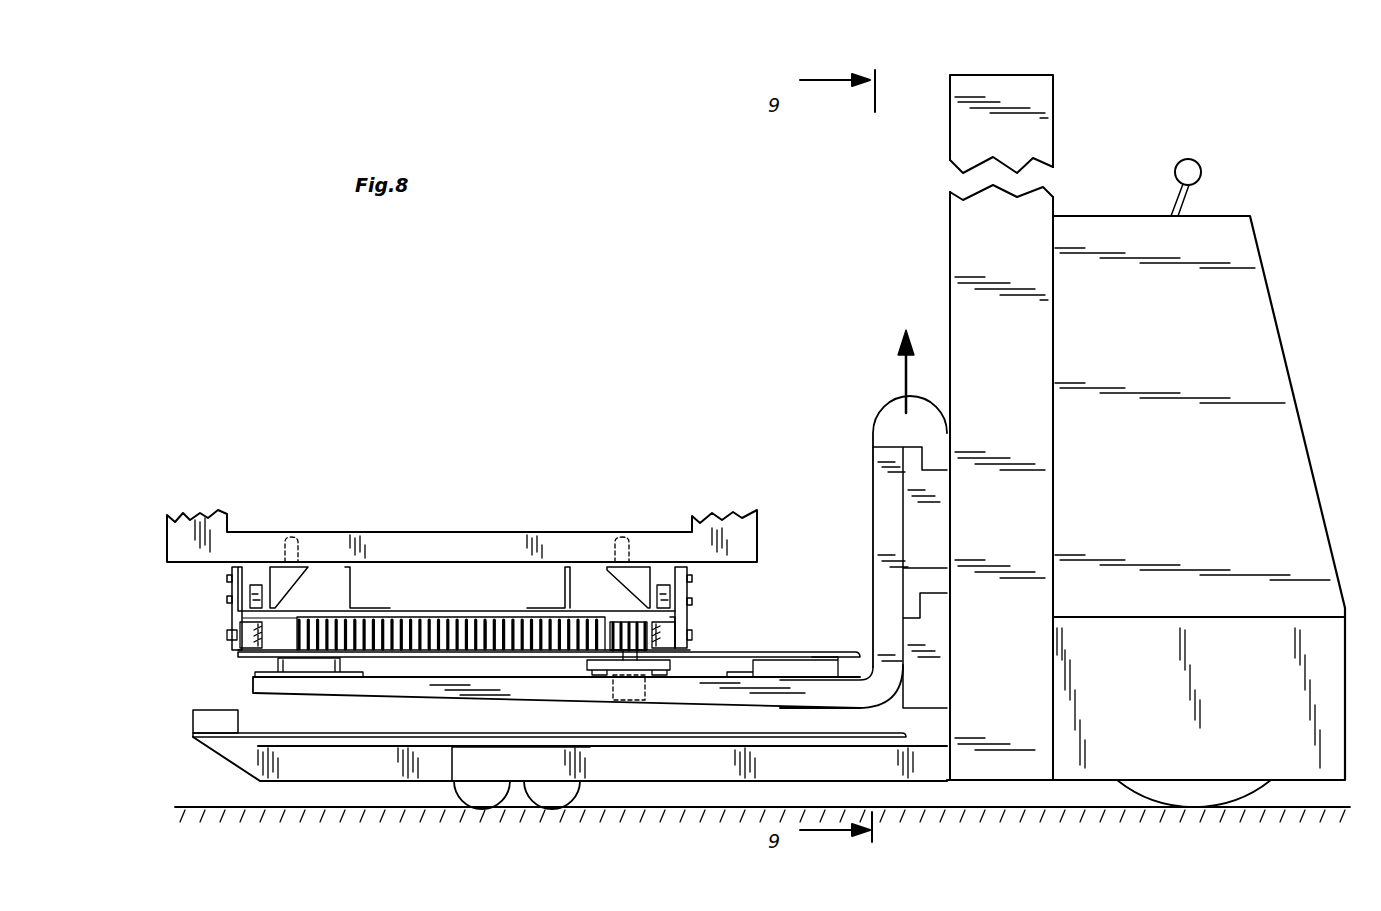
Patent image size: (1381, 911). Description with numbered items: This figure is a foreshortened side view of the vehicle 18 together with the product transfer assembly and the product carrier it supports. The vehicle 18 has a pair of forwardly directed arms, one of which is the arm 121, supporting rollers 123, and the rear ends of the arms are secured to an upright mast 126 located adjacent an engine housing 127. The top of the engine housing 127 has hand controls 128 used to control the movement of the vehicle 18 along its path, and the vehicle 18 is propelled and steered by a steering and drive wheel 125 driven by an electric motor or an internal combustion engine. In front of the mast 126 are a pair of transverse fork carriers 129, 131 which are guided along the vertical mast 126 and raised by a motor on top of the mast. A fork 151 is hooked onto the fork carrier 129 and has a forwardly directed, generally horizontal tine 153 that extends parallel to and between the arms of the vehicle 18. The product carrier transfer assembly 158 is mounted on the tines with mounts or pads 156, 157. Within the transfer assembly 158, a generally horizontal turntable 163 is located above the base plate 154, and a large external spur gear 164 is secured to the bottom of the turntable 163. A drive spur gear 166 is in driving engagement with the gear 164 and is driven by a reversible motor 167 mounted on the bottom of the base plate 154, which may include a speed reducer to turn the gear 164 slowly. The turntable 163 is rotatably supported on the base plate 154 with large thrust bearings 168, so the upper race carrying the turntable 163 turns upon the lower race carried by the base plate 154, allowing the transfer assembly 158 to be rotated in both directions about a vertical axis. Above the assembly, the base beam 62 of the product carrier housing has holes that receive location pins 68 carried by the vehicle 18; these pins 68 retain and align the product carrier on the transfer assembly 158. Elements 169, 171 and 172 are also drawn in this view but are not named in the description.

The vehicle 18 is at (1128, 151).
The base beam 62 is at (474, 546).
The location pins 68 is at (300, 548).
The forwardly directed arm 121 is at (650, 768).
The rollers 123 is at (540, 790).
The steering and drive wheel 125 is at (1195, 790).
The upright mast 126 is at (952, 143).
The engine housing 127 is at (1118, 340).
The hand controls 128 is at (1204, 166).
The fork carrier 129 is at (932, 514).
The fork carrier 131 is at (935, 658).
The fork 151 is at (876, 552).
The tine 153 is at (445, 690).
The base plate 154 is at (240, 657).
The mount or pad 156 is at (793, 668).
The mount or pad 157 is at (318, 668).
The product carrier transfer assembly 158 is at (218, 601).
The turntable 163 is at (408, 617).
The large external spur gear 164 is at (488, 632).
The drive spur gear 166 is at (628, 628).
The motor 167 is at (617, 672).
The thrust bearings 168 is at (244, 636).
The side plates 169 is at (232, 608).
The guide bar 171 is at (268, 628).
The spacer plate 172 is at (682, 614).